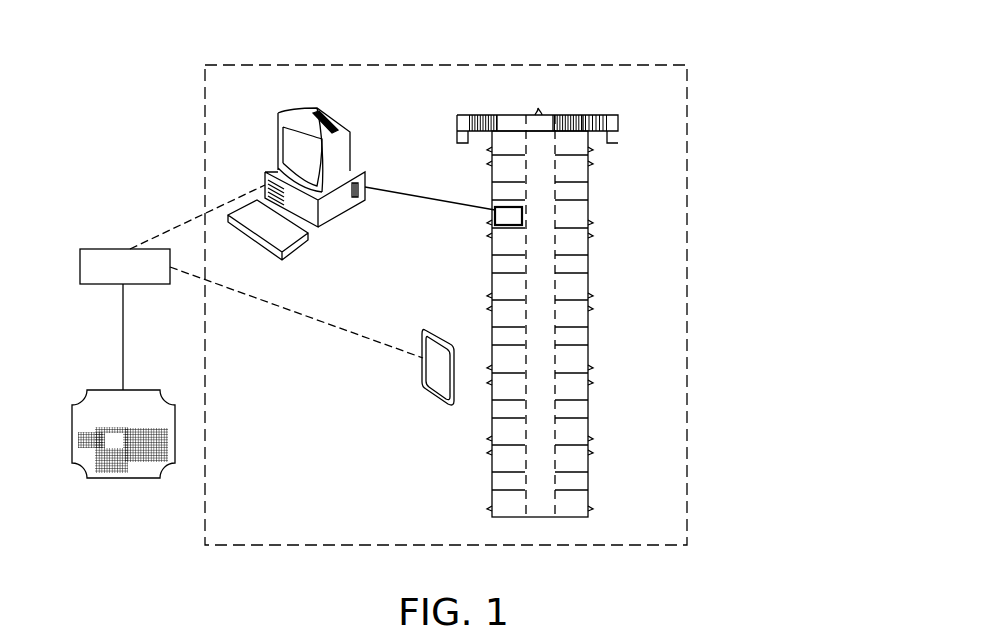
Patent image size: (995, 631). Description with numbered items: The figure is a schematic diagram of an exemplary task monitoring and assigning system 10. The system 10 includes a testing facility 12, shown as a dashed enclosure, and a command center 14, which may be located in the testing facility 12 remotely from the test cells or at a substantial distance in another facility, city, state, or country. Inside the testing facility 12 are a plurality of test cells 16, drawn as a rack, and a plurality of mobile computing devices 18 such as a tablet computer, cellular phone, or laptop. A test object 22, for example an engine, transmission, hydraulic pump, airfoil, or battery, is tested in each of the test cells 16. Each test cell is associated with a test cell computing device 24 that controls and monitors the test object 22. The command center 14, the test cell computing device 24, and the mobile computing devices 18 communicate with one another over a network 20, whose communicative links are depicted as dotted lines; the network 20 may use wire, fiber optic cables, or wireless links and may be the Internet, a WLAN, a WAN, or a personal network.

The system 10 is at (748, 78).
The testing facility 12 is at (687, 305).
The command center 14 is at (122, 478).
The test cells 16 is at (570, 103).
The mobile computing devices 18 is at (442, 330).
The network 20 is at (112, 284).
The test object 22 is at (496, 208).
The test cell computing device 24 is at (312, 113).